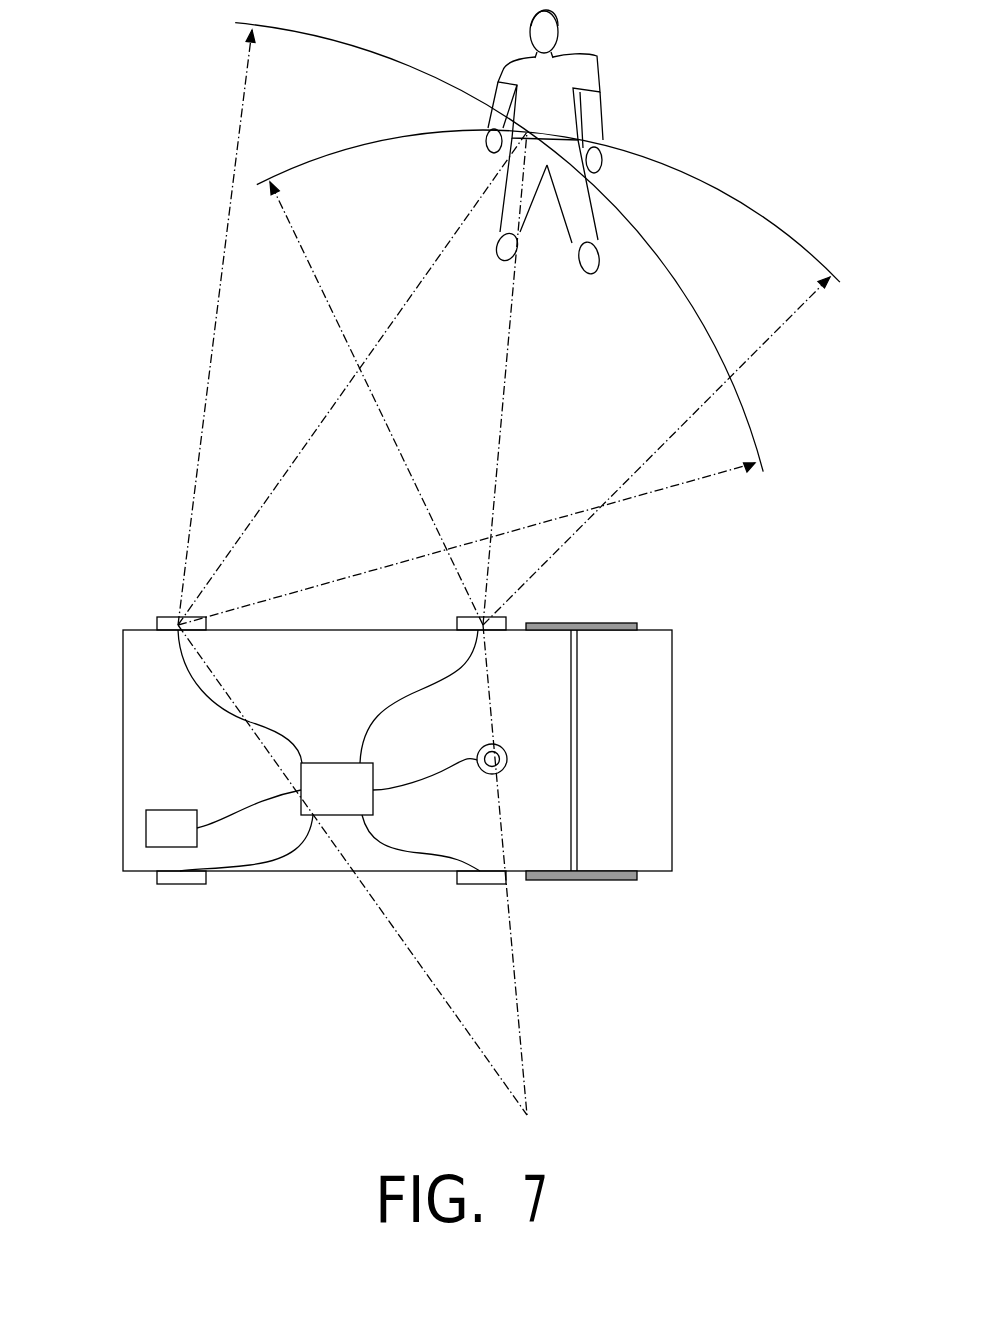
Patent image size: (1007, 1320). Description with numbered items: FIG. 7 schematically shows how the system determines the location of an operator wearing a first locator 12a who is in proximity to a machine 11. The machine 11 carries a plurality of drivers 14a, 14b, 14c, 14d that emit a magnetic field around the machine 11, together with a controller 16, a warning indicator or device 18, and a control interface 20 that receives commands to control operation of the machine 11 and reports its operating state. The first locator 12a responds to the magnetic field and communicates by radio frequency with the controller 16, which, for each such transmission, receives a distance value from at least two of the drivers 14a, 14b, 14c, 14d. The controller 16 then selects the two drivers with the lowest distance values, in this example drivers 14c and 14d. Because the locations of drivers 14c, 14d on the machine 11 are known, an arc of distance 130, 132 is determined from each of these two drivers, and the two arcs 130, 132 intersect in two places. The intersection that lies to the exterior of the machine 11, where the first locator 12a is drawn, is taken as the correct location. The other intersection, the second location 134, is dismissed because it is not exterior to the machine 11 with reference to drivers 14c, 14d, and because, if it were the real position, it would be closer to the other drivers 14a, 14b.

The machine 11 is at (291, 872).
The first locator 12a is at (572, 68).
The driver 14a is at (183, 885).
The driver 14b is at (490, 884).
The driver 14c is at (506, 626).
The driver 14d is at (162, 618).
The controller 16 is at (338, 815).
The warning indicator or device 18 is at (506, 748).
The control interface 20 is at (152, 847).
The arc of distance 130 is at (750, 422).
The arc of distance 132 is at (717, 187).
The second location 134 is at (527, 1115).